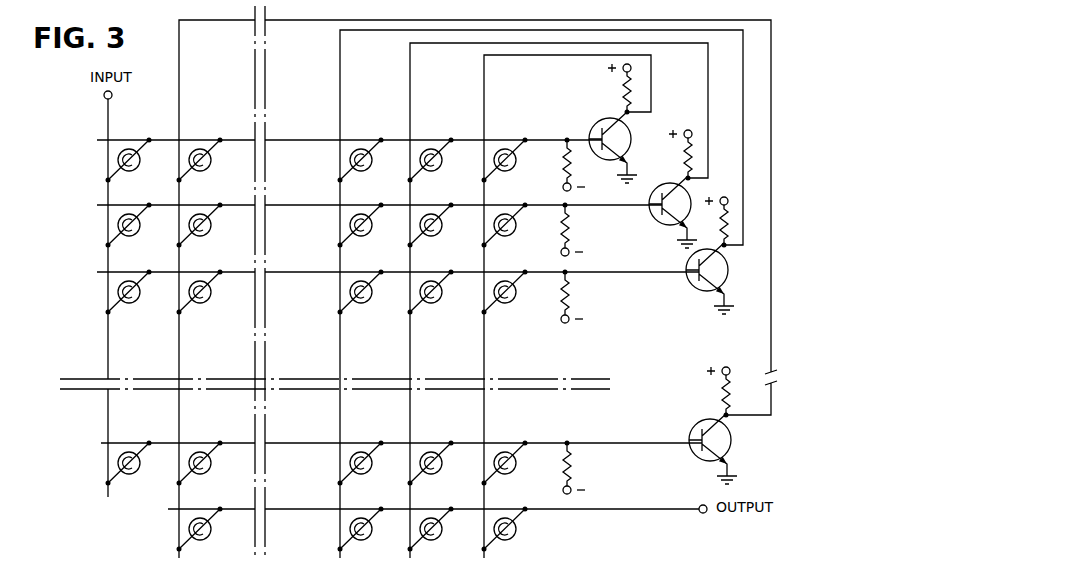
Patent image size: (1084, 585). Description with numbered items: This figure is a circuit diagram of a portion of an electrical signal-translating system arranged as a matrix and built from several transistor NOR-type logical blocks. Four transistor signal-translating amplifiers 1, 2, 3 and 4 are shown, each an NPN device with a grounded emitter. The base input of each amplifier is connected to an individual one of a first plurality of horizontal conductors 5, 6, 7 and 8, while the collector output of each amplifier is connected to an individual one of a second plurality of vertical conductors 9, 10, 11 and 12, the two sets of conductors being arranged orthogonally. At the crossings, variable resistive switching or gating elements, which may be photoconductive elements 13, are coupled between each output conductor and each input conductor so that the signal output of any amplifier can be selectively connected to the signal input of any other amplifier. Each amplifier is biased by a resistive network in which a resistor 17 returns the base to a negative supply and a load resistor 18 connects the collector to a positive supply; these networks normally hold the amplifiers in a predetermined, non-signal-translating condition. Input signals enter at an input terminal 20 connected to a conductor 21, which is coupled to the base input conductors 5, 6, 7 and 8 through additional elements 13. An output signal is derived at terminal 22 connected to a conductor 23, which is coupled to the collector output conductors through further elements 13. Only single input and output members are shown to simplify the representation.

The amplifier 1 is at (598, 123).
The amplifier 2 is at (658, 188).
The amplifier 3 is at (690, 259).
The amplifier 4 is at (694, 426).
The conductor 5 is at (304, 139).
The conductor 6 is at (304, 204).
The conductor 7 is at (308, 271).
The conductor 8 is at (307, 442).
The conductor 9 is at (179, 106).
The conductor 10 is at (340, 108).
The conductor 11 is at (410, 108).
The conductor 12 is at (484, 108).
The photoconductive element 13 is at (511, 553).
The resistor 17 is at (579, 464).
The load resistor 18 is at (724, 402).
The input terminal 20 is at (104, 96).
The conductor 21 is at (108, 126).
The terminal 22 is at (702, 513).
The conductor 23 is at (630, 508).